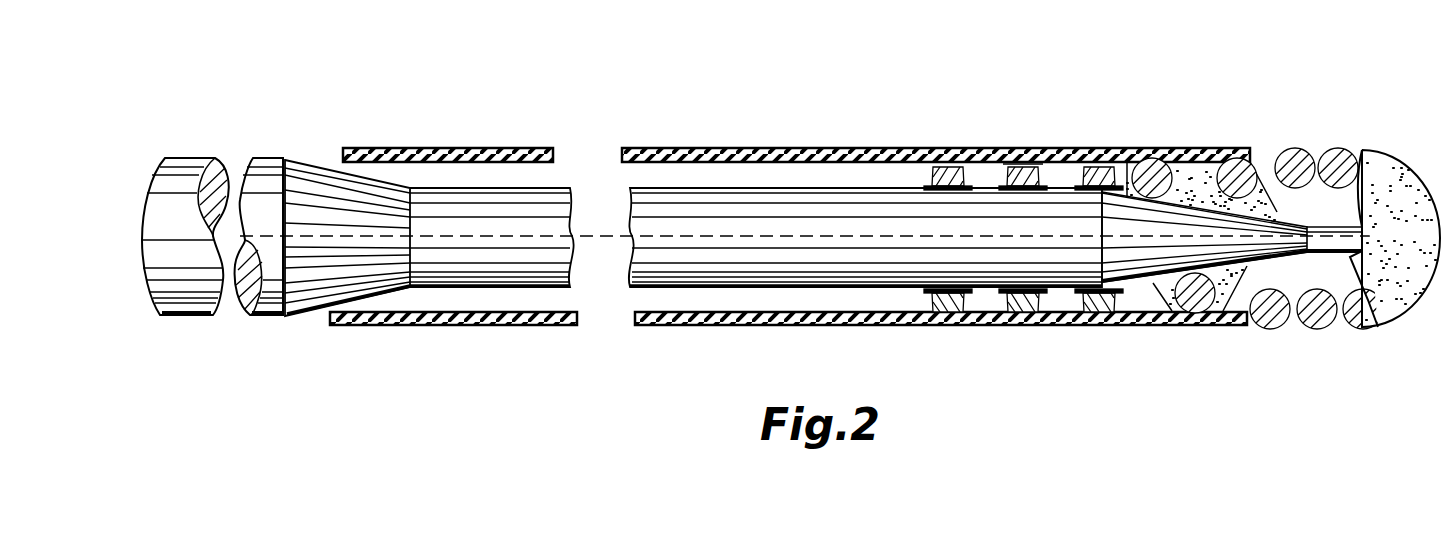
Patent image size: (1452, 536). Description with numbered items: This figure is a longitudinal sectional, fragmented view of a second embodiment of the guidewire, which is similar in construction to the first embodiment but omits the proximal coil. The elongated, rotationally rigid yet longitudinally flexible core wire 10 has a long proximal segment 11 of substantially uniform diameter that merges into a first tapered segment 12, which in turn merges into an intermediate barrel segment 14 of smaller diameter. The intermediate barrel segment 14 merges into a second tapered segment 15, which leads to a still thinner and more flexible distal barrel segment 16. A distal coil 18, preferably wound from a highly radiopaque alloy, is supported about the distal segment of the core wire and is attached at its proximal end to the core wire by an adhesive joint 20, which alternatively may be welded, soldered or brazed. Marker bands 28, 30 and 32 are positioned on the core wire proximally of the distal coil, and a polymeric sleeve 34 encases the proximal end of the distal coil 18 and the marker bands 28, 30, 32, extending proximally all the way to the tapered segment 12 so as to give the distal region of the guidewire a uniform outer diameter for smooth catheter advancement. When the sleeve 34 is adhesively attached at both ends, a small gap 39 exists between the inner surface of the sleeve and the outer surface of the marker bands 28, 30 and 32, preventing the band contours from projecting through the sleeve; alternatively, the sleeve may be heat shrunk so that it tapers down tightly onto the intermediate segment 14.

The core wire 10 is at (200, 150).
The proximal segment 11 is at (220, 228).
The first tapered segment 12 is at (317, 190).
The intermediate barrel segment 14 is at (515, 203).
The second tapered segment 15 is at (1125, 210).
The distal barrel segment 16 is at (1378, 327).
The distal coil 18 is at (1287, 323).
The joint 20 is at (1205, 185).
The marker band 28 is at (920, 148).
The marker band 30 is at (1003, 160).
The marker band 32 is at (1093, 168).
The polymeric sleeve 34 is at (418, 148).
The gap 39 is at (1030, 160).